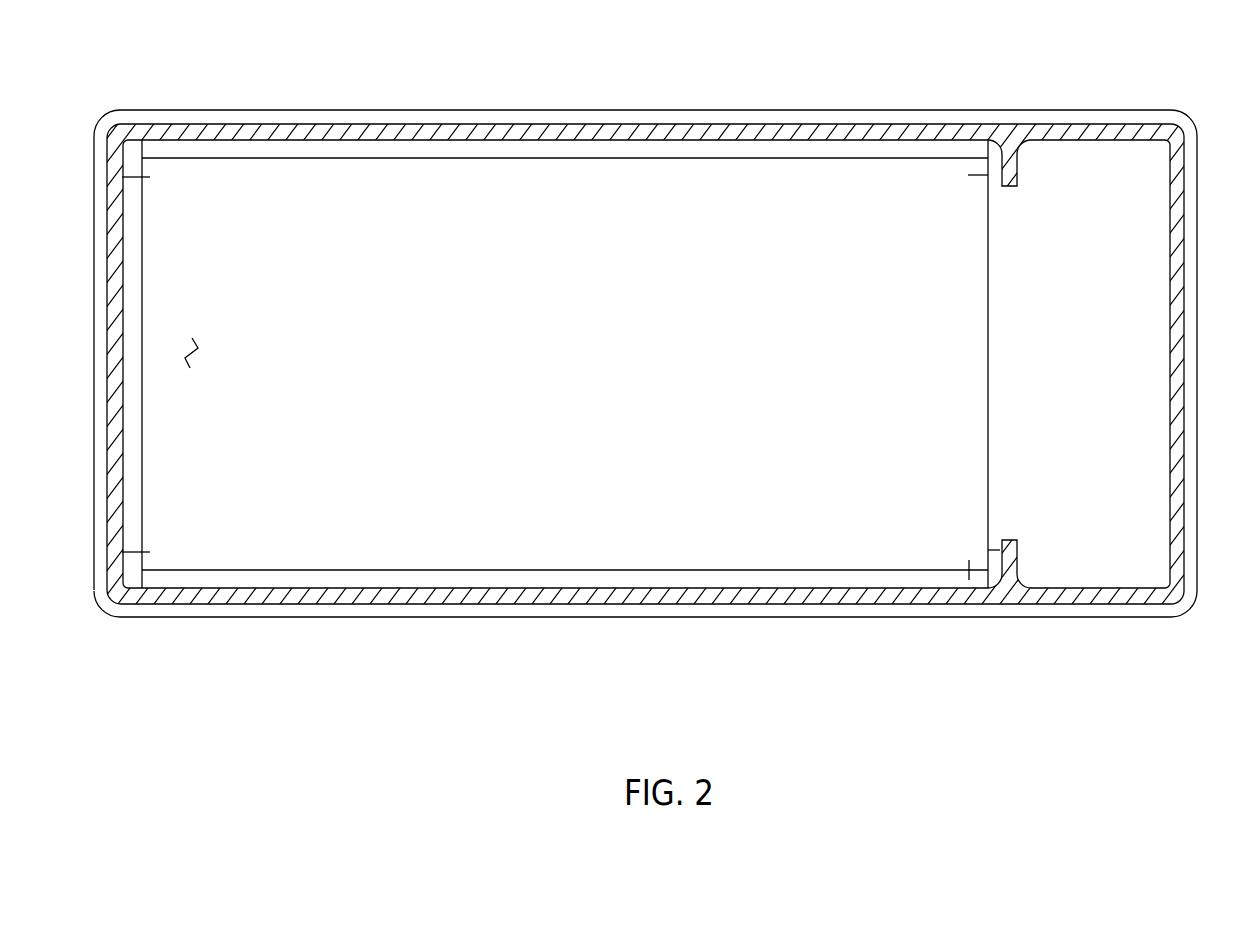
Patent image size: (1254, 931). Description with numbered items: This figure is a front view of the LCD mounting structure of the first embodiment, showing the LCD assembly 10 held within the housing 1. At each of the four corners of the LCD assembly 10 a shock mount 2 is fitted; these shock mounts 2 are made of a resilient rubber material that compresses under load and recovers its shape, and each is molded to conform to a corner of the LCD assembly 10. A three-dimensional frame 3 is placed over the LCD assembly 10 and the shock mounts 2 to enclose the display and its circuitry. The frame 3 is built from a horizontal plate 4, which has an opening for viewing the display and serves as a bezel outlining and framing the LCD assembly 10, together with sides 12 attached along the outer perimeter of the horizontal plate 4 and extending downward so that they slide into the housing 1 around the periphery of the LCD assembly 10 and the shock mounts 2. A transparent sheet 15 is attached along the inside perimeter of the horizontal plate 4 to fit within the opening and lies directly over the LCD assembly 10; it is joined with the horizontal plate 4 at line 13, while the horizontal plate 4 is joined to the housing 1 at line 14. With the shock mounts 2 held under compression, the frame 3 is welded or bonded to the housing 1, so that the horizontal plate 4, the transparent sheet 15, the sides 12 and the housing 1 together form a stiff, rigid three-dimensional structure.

The housing 1 is at (265, 111).
The shock mount 2 is at (137, 154).
The three-dimensional frame 3 is at (606, 619).
The horizontal plate 4 is at (745, 150).
The LCD assembly 10 is at (182, 347).
The sides 12 is at (878, 132).
The line 13 is at (637, 157).
The line 14 is at (438, 125).
The transparent sheet 15 is at (766, 521).